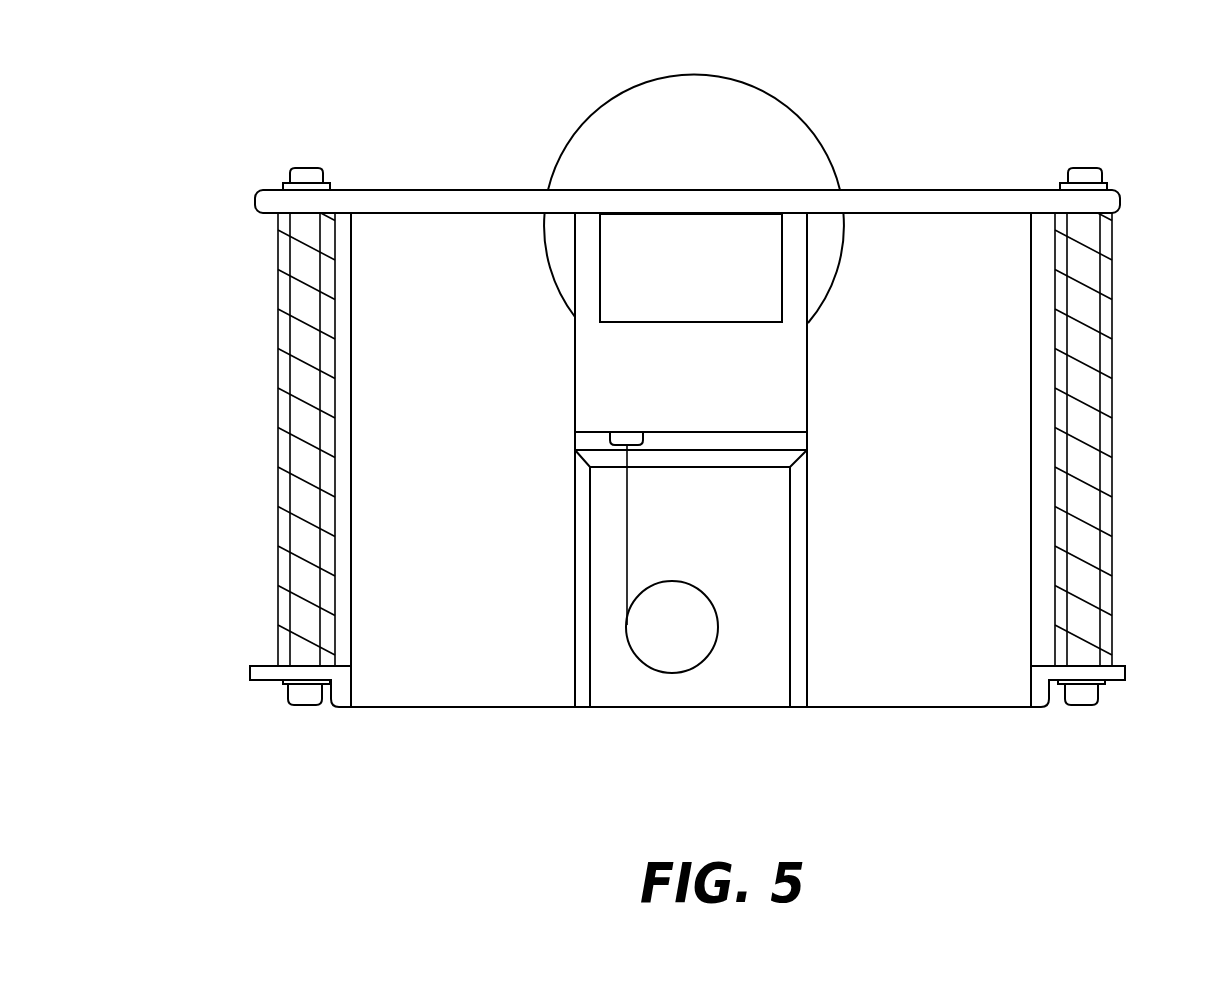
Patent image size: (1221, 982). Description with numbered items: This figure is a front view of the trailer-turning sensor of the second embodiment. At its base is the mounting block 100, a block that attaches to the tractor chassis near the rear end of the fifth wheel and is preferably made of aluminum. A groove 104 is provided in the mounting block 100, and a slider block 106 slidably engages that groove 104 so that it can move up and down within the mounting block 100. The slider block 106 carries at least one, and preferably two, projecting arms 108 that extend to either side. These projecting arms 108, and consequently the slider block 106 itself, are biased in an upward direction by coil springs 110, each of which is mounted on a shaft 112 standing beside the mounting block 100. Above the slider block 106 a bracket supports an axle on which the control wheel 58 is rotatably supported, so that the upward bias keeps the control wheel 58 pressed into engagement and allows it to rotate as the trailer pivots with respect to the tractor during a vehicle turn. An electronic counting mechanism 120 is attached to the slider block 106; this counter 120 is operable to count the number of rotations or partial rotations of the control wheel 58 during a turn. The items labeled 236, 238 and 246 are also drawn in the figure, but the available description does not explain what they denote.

The control wheel 58 is at (662, 117).
The mounting block 100 is at (458, 675).
The groove 104 is at (763, 560).
The slider block 106 is at (605, 365).
The projecting arms 108 is at (400, 205).
The coil springs 110 is at (280, 292).
The shafts 112 is at (303, 420).
The electronic counting mechanism 120 is at (740, 283).
The circular aperture 236 is at (683, 647).
The wire / line 238 is at (628, 527).
The tab / clip 246 is at (625, 432).